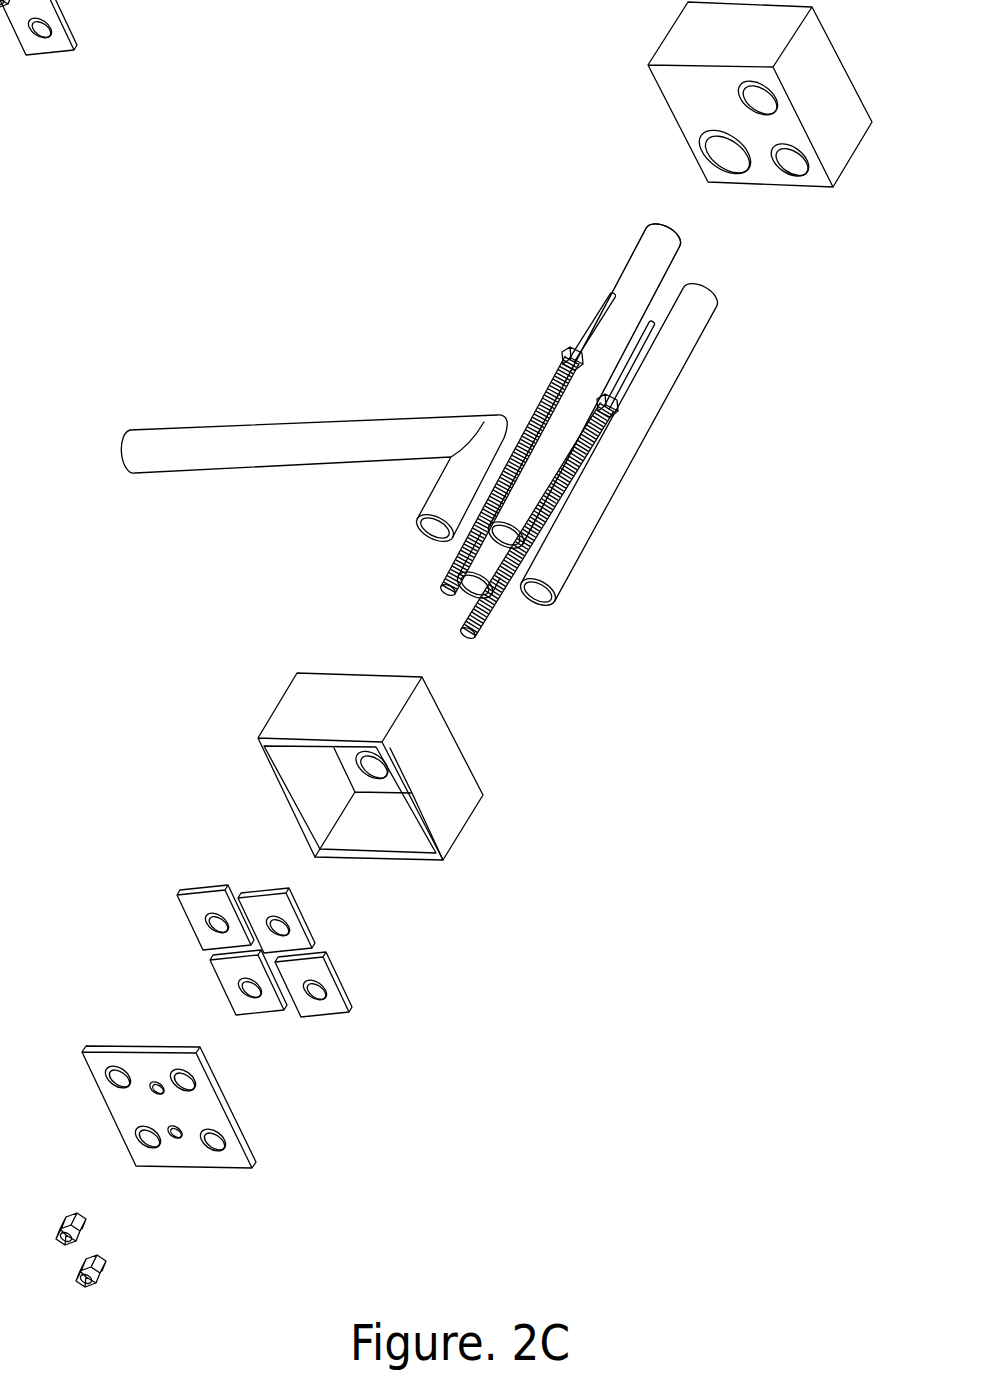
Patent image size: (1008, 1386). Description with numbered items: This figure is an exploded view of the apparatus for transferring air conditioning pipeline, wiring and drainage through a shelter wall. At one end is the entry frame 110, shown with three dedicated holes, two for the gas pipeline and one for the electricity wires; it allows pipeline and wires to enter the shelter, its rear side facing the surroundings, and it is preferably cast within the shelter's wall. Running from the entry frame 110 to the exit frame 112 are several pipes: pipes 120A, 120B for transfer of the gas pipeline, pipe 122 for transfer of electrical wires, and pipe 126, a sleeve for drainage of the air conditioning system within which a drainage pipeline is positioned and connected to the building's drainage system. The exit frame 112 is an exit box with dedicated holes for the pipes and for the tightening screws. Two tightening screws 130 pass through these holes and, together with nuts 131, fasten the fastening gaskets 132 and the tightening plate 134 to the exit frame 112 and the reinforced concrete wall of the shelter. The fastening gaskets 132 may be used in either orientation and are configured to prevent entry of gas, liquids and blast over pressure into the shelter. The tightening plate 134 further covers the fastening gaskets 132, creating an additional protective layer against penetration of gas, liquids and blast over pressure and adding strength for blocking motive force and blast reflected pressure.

The entry frame 110 is at (685, 140).
The exit frame 112 is at (455, 740).
The pipe 120A is at (637, 450).
The pipe 120B is at (468, 602).
The pipe 122 is at (643, 277).
The pipe 126 is at (287, 438).
The tightening screw 130 is at (450, 570).
The nut 131 is at (103, 1260).
The fastening gasket 132 is at (343, 983).
The tightening plate 134 is at (238, 1127).